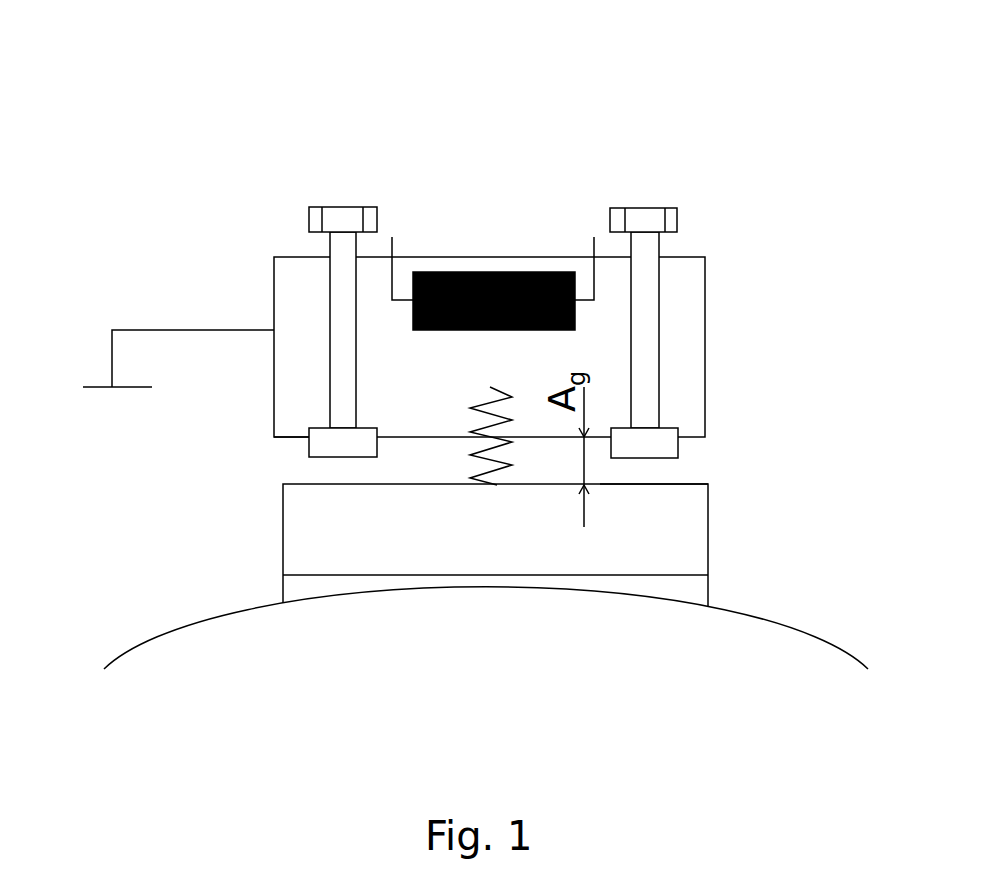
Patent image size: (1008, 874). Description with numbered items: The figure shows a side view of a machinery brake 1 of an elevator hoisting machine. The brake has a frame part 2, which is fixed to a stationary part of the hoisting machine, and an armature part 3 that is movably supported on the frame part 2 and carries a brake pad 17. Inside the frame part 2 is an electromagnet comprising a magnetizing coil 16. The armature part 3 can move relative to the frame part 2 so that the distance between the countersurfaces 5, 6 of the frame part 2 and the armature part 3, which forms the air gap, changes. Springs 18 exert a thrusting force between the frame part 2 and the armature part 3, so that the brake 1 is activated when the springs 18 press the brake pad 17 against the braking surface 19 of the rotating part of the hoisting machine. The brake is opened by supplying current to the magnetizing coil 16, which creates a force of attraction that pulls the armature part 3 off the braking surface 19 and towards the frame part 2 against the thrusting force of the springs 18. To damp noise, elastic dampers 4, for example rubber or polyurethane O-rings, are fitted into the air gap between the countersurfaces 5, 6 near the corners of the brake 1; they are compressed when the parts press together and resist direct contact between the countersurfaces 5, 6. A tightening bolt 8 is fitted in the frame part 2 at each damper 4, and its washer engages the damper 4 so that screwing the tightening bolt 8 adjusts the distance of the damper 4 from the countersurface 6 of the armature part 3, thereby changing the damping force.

The machinery brake 1 is at (318, 107).
The frame part 2 is at (705, 338).
The armature part 3 is at (708, 527).
The elastic damper 4 is at (309, 453).
The countersurface of the frame part 5 is at (283, 438).
The countersurface of the armature part 6 is at (673, 484).
The tightening bolt 8 is at (330, 318).
The magnetizing coil 16 is at (493, 272).
The brake pad 17 is at (708, 593).
The spring 18 is at (480, 408).
The braking surface 19 is at (185, 630).